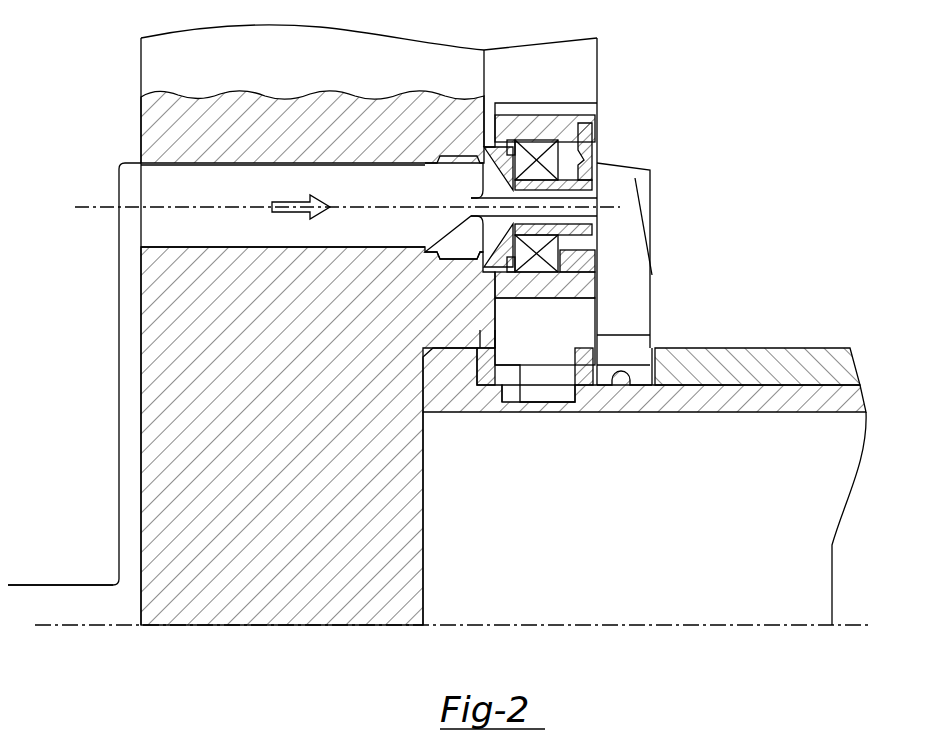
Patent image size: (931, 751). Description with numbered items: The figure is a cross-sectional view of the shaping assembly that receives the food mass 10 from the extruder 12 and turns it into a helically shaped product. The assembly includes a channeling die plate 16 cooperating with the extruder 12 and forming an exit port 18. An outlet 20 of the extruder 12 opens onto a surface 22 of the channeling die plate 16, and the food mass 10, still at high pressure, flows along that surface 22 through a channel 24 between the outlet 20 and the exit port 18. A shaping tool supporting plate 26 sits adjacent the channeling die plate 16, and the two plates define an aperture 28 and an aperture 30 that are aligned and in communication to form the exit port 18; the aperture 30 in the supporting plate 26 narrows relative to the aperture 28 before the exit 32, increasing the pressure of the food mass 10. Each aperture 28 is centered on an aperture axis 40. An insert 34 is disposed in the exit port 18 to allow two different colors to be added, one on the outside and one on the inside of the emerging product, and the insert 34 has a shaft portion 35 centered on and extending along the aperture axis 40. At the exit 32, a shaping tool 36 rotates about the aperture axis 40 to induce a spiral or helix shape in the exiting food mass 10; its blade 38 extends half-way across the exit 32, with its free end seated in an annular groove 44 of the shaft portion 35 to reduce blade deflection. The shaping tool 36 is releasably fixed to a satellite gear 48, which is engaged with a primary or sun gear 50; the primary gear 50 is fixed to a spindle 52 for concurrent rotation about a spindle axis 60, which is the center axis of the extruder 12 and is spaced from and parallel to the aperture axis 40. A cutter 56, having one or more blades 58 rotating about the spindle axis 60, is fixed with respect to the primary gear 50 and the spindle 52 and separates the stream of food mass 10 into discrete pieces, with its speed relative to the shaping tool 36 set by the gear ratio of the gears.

The food mass 10 is at (290, 213).
The extruder 12 is at (80, 506).
The channeling die plate 16 is at (162, 372).
The exit port 18 is at (193, 165).
The outlet 20 is at (85, 597).
The surface 22 is at (140, 282).
The channel 24 is at (135, 452).
The shaping tool supporting plate 26 is at (580, 57).
The aperture 28 is at (330, 247).
The aperture 30 is at (480, 185).
The exit 32 is at (593, 252).
The insert 34 is at (437, 237).
The shaft portion 35 is at (495, 207).
The shaping tool 36 is at (665, 122).
The blade 38 is at (595, 160).
The aperture axis 40 is at (88, 215).
The groove 44 is at (620, 222).
The satellite gear 48 is at (557, 120).
The primary gear 50 is at (580, 318).
The spindle 52 is at (790, 338).
The cutter 56 is at (733, 173).
The blade 58 is at (635, 285).
The spindle axis 60 is at (612, 625).